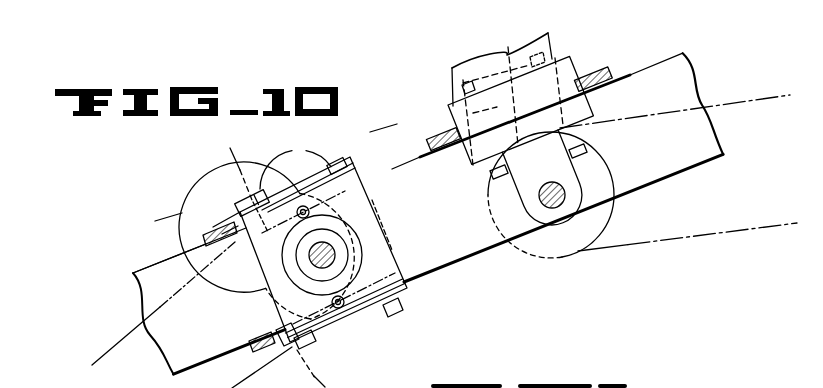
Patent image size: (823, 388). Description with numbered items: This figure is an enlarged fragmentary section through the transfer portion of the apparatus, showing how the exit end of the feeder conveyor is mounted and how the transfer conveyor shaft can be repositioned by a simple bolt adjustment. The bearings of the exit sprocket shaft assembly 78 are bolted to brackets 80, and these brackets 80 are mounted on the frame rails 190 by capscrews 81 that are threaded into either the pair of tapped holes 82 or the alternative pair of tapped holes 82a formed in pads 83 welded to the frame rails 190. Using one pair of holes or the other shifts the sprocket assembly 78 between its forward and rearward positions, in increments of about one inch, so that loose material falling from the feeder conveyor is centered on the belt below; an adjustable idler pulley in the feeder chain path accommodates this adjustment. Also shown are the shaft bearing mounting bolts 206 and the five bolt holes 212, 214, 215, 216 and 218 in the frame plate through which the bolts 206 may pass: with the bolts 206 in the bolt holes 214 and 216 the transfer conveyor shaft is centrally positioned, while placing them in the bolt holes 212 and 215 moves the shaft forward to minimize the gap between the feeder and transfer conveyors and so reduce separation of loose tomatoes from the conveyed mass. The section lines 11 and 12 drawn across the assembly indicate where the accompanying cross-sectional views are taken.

The section line 11- 11 is at (188, 177).
The section line 12- 12 is at (157, 177).
The exit sprocket shaft assembly 78 is at (262, 266).
The brackets 80 is at (366, 195).
The capscrews 81 is at (283, 181).
The tapped holes 82 is at (314, 186).
The tapped holes 82a is at (234, 214).
The pads 83 is at (203, 250).
The frame rails 190 is at (165, 348).
The shaft bearing mounting bolts 206 is at (453, 83).
The bolt hole 212 is at (437, 155).
The bolt hole 214 is at (473, 113).
The bolt hole 215 is at (510, 52).
The bolt hole 216 is at (597, 105).
The bolt hole 218 is at (594, 76).